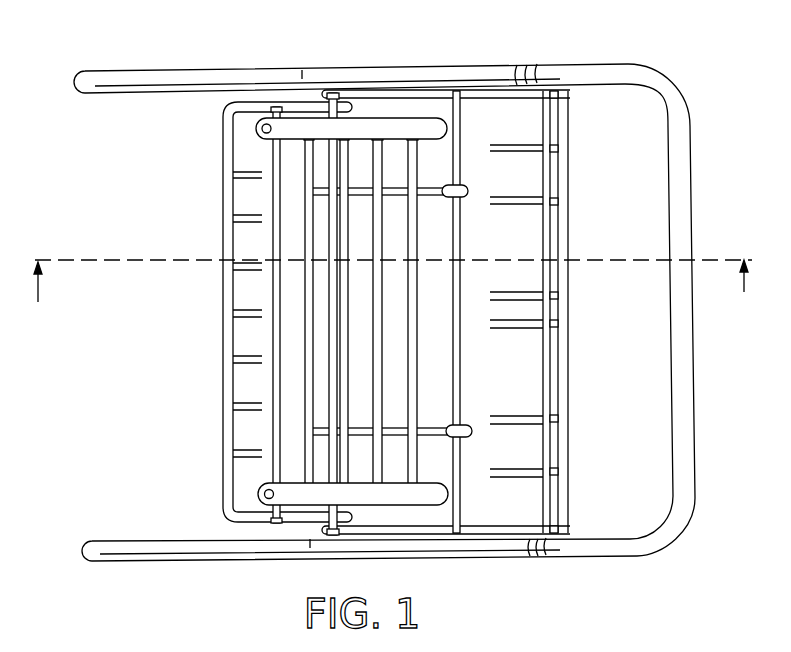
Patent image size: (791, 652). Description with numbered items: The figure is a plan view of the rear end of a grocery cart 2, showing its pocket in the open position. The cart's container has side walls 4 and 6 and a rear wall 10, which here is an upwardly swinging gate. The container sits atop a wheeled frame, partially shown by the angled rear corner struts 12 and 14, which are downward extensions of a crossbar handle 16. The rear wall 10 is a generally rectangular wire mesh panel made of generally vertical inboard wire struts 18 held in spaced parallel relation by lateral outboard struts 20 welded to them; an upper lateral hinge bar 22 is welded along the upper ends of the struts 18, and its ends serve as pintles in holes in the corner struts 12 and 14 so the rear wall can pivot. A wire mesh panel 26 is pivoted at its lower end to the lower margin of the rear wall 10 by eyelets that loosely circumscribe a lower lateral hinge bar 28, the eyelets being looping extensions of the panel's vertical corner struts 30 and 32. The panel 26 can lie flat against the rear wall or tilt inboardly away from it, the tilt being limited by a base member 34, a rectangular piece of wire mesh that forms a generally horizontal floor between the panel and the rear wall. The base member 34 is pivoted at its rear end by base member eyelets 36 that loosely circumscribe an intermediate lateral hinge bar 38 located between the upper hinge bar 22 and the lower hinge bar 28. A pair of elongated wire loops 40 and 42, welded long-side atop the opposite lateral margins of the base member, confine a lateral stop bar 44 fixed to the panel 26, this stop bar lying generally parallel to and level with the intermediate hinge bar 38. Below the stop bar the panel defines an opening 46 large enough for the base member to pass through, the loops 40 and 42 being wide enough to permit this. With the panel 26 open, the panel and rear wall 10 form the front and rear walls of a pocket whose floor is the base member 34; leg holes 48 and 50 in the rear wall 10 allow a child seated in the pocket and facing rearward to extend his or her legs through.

The grocery cart 2 is at (391, 297).
The side wall 4 is at (148, 95).
The side wall 6 is at (198, 563).
The rear wall 10 is at (568, 169).
The rear corner strut 12 is at (492, 65).
The rear corner strut 14 is at (530, 556).
The crossbar handle 16 is at (681, 203).
The inboard wire struts 18 is at (525, 206).
The lateral outboard struts 20 is at (568, 282).
The upper lateral hinge bar 22 is at (544, 363).
The wire mesh panel 26 is at (224, 222).
The lower lateral hinge bar 28 is at (340, 373).
The panel vertical corner strut 30 is at (255, 112).
The panel vertical corner strut 32 is at (258, 522).
The base member 34 is at (386, 375).
The base member eyelets 36 is at (460, 185).
The intermediate lateral hinge bar 38 is at (462, 282).
The elongated wire loop 40 is at (407, 117).
The elongated wire loop 42 is at (388, 510).
The lateral stop bar 44 is at (277, 418).
The opening 46 is at (293, 442).
The leg hole 48 is at (513, 241).
The leg hole 50 is at (527, 388).